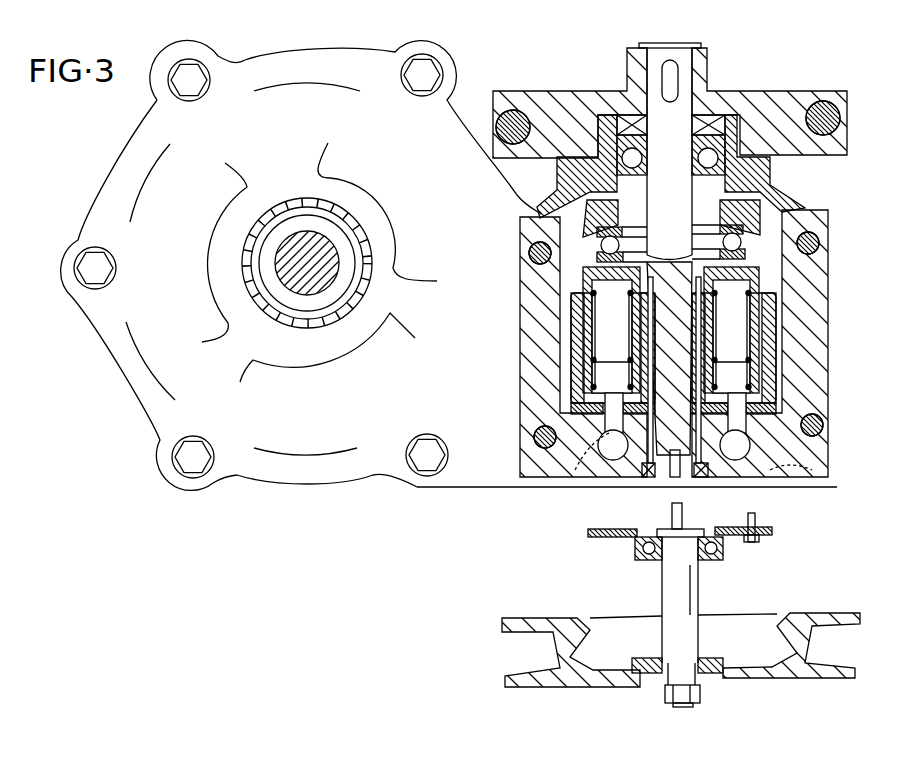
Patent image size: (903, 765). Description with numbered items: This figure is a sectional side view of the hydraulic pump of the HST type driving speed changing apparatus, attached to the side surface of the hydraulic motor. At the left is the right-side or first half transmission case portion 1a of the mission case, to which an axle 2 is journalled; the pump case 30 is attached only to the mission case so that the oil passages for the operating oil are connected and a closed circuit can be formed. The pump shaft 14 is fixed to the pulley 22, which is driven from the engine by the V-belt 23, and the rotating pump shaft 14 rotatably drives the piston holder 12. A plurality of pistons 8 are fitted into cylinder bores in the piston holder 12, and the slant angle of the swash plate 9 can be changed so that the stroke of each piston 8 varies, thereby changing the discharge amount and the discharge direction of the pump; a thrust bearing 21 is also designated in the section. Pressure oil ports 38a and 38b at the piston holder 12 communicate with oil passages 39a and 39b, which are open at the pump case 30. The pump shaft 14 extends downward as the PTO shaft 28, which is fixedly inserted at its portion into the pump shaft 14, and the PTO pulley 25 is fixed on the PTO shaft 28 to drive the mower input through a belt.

The first half transmission case portion 1a is at (110, 174).
The axle 2 is at (280, 297).
The piston 8 is at (672, 257).
The swash plate 9 is at (800, 192).
The piston holder 12 is at (775, 338).
The pump shaft 14 is at (674, 169).
The thrust bearing 21 is at (604, 246).
The pulley 22 is at (760, 91).
The V-belt 23 is at (841, 125).
The PTO pulley 25 is at (741, 663).
The PTO shaft 28 is at (702, 587).
The pump case 30 is at (828, 413).
The pressure oil port 38a is at (790, 472).
The pressure oil port 38b is at (607, 424).
The oil passage 39a is at (737, 452).
The oil passage 39b is at (613, 452).